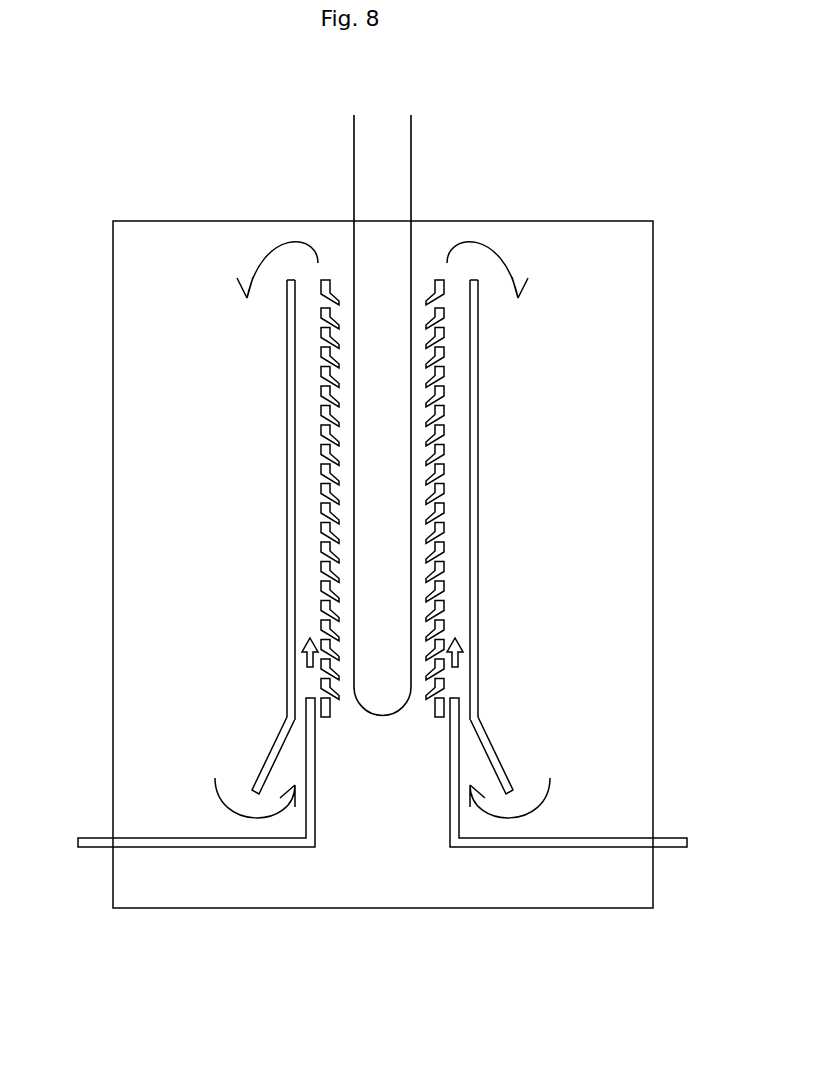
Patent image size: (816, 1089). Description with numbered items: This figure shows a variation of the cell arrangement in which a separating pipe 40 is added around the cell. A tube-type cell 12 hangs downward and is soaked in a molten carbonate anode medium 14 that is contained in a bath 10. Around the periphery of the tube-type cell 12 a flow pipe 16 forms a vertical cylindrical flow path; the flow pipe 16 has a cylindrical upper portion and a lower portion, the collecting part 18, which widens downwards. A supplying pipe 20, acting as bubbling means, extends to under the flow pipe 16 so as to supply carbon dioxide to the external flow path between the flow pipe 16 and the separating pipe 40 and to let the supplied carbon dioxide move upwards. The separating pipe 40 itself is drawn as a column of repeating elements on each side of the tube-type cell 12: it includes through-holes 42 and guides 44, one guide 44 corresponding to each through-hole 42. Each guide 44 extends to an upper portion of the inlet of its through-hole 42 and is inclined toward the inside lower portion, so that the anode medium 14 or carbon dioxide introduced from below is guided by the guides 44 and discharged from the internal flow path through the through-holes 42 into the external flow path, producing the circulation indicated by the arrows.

The bath 10 is at (162, 221).
The tube-type cell 12 is at (353, 131).
The anode medium 14 is at (212, 250).
The flow pipe 16 is at (290, 515).
The collecting part 18 is at (270, 760).
The supplying pipe 20 is at (280, 848).
The separating pipe 40 is at (252, 498).
The through-hole 42 is at (320, 441).
The guide 44 is at (327, 459).